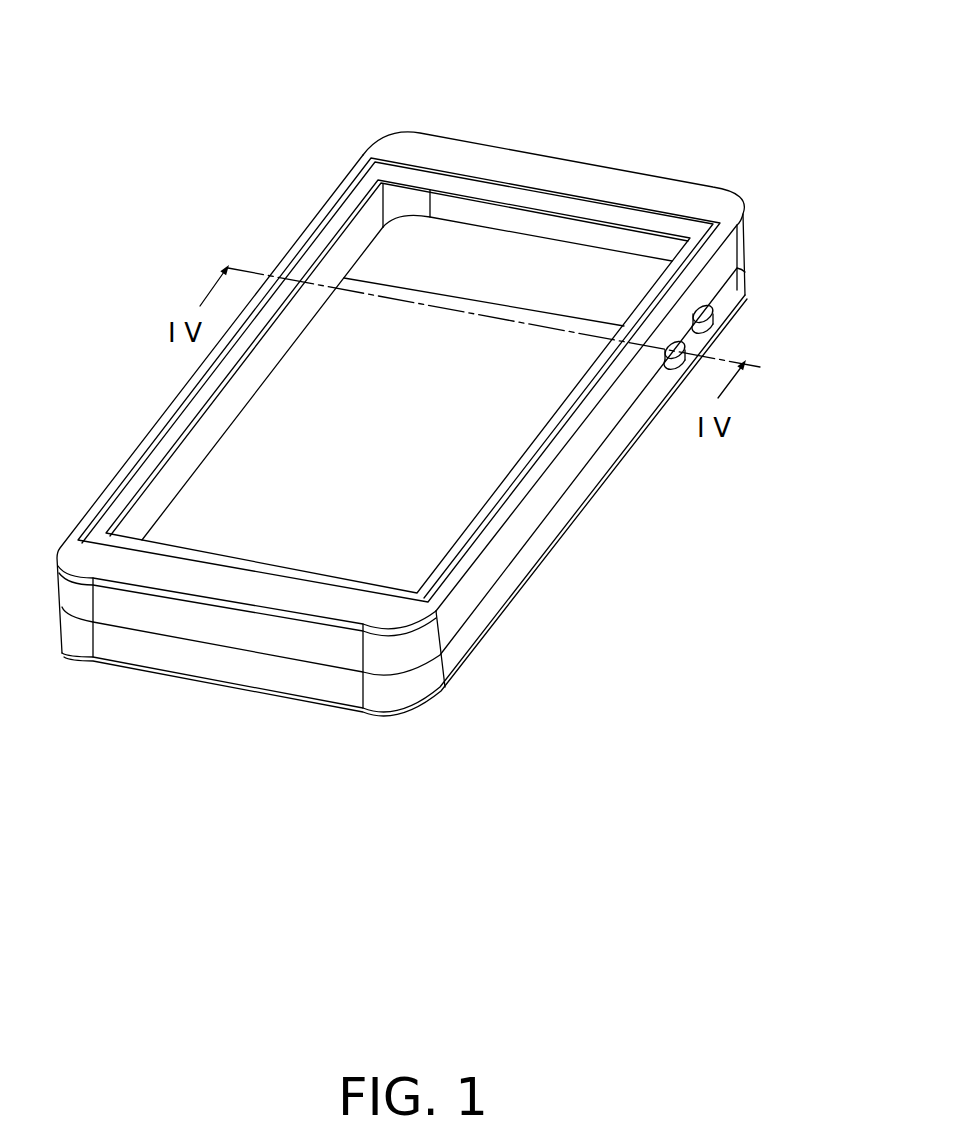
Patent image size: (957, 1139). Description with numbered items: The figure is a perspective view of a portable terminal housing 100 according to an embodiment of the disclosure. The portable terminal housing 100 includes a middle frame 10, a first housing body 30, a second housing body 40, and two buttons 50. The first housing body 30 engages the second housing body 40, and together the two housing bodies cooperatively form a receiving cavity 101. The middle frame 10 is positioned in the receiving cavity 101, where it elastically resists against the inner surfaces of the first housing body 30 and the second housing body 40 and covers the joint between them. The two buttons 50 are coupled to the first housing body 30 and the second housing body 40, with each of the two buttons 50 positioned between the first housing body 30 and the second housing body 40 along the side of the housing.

The portable terminal housing 100 is at (486, 35).
The middle frame 10 is at (187, 462).
The receiving cavity 101 is at (481, 352).
The first housing body 30 is at (540, 497).
The second housing body 40 is at (613, 450).
The buttons 50 is at (678, 347).